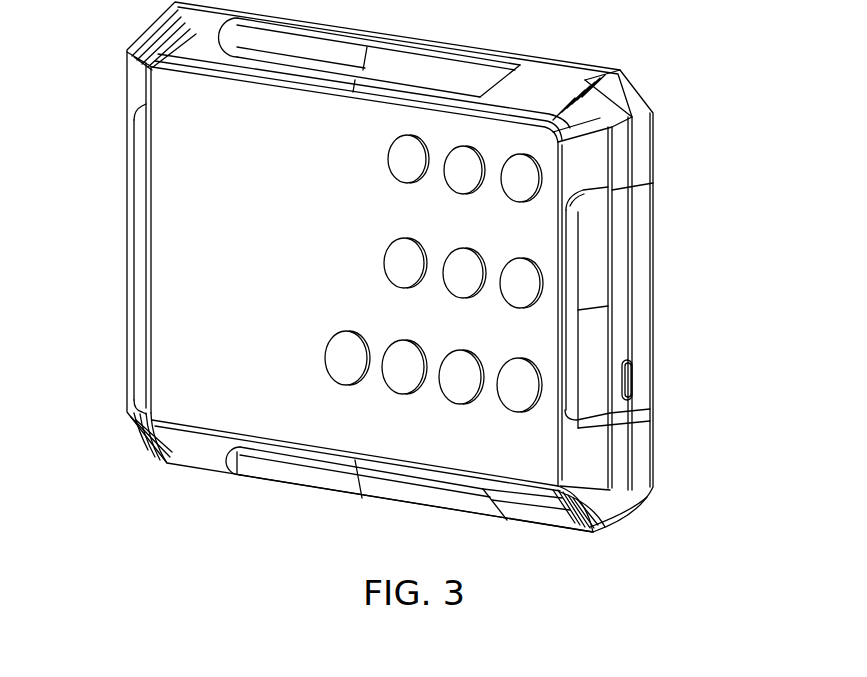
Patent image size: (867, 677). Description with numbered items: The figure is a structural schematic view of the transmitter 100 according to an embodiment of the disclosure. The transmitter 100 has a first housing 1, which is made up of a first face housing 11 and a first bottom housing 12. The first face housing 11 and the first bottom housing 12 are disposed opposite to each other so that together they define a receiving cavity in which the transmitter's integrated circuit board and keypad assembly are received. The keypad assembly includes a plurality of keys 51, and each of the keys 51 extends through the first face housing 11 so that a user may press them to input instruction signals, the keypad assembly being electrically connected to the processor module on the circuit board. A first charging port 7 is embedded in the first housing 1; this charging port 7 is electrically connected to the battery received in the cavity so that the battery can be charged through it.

The protective case 1 is at (390, 267).
The button 7 is at (630, 375).
The side bumper portion 11 is at (593, 260).
The top bumper portion 12 is at (641, 166).
The through holes 51 is at (400, 265).
The electronic device back plate 100 is at (210, 183).